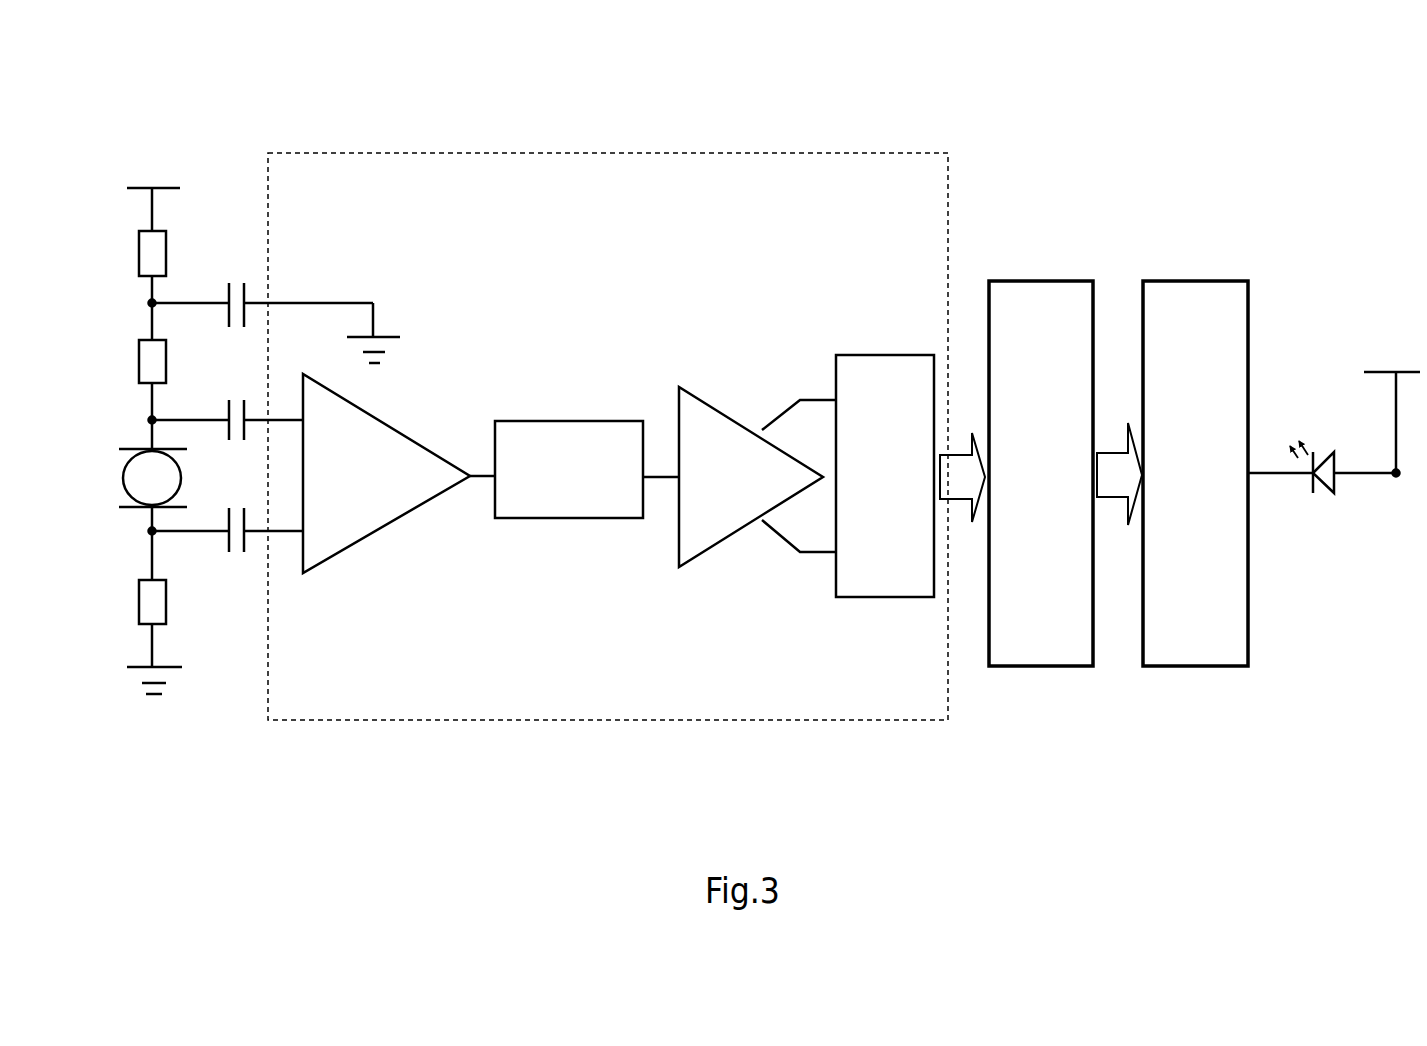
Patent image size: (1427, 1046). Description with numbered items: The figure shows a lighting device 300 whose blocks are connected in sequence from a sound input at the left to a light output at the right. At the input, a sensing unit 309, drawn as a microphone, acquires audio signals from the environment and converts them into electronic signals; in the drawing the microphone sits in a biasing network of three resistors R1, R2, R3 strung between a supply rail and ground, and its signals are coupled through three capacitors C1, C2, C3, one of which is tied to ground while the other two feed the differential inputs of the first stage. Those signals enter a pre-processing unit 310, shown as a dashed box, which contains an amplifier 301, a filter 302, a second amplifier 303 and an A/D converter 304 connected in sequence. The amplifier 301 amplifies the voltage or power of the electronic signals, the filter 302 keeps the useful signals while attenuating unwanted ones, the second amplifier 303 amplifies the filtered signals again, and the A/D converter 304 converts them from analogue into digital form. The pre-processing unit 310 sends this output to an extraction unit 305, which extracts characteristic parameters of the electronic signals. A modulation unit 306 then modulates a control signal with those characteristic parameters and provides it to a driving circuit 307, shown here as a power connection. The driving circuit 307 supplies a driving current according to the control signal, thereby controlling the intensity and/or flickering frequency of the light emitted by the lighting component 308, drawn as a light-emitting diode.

The lighting device 300 is at (225, 66).
The amplifier 301 is at (390, 490).
The filter 302 is at (600, 490).
The second amplifier 303 is at (775, 490).
The A/D converter 304 is at (918, 490).
The extraction unit 305 is at (1075, 489).
The modulation unit 306 is at (1228, 489).
The driving circuit 307 is at (1344, 314).
The lighting component 308 is at (1335, 500).
The sensing unit 309 is at (122, 478).
The pre-processing unit 310 is at (605, 150).
The first resistor R1 is at (124, 257).
The second resistor R2 is at (124, 361).
The third resistor R3 is at (124, 605).
The first capacitor C1 is at (262, 285).
The second capacitor C2 is at (227, 399).
The third capacitor C3 is at (227, 556).